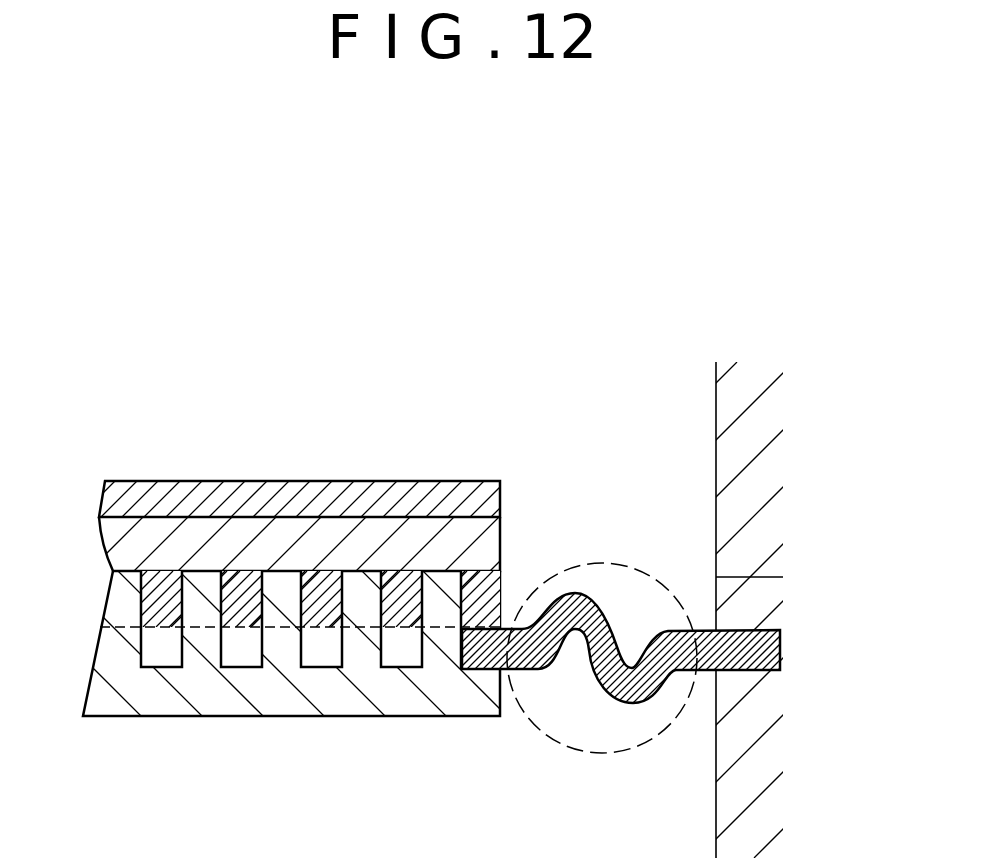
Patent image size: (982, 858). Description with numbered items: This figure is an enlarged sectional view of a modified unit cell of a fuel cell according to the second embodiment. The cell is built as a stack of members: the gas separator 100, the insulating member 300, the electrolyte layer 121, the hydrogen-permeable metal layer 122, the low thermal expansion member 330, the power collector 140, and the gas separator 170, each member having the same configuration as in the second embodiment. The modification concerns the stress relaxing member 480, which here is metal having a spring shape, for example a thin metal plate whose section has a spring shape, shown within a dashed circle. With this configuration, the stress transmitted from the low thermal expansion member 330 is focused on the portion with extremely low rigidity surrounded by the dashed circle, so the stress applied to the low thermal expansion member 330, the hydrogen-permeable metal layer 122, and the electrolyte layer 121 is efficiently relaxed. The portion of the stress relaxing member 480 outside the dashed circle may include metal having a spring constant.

The gas separator 100 is at (752, 538).
The electrolyte layer 121 is at (494, 497).
The hydrogen-permeable metal layer 122 is at (494, 552).
The power collector 140 is at (113, 652).
The gas separator 170 is at (750, 721).
The insulating member 300 is at (768, 600).
The low thermal expansion member 330 is at (145, 613).
The stress relaxing member 480 is at (622, 690).